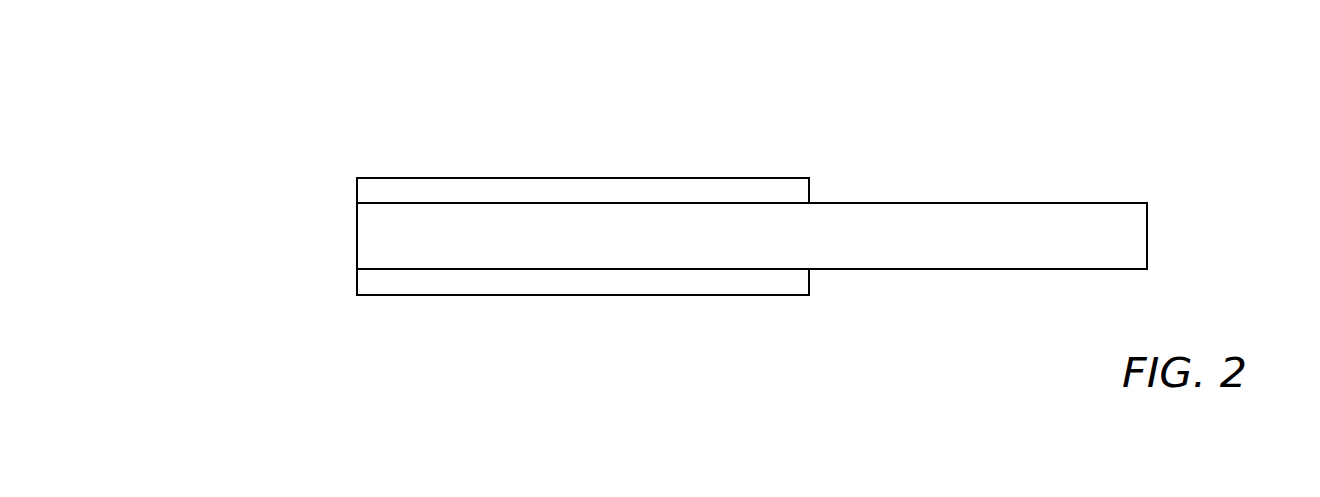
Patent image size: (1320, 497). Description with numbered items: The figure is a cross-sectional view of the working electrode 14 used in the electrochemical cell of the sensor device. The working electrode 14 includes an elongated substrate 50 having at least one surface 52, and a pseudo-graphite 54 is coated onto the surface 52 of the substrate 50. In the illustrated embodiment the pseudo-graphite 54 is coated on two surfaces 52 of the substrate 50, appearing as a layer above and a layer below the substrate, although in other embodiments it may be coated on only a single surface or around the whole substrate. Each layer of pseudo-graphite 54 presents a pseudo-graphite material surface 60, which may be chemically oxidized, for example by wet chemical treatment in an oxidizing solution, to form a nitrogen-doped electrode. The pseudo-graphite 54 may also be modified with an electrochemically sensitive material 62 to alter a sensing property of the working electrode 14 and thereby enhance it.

The working electrode 14 is at (283, 153).
The substrate 50 is at (953, 252).
The surface 52 is at (367, 250).
The pseudo-graphite 54 is at (410, 202).
The pseudo-graphite material surface 60 is at (477, 193).
The electrochemically sensitive material 62 is at (665, 193).